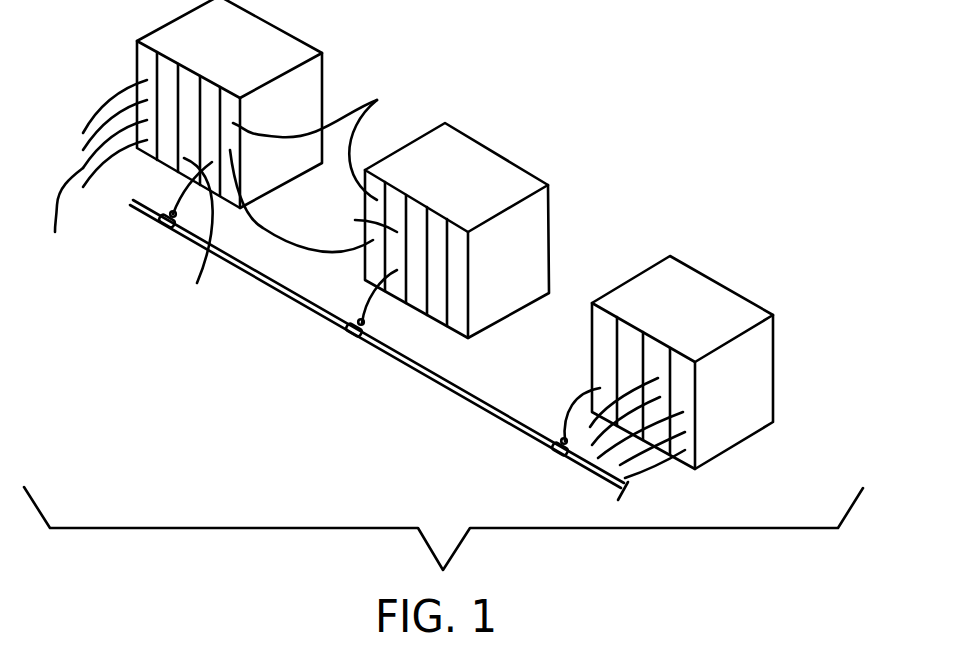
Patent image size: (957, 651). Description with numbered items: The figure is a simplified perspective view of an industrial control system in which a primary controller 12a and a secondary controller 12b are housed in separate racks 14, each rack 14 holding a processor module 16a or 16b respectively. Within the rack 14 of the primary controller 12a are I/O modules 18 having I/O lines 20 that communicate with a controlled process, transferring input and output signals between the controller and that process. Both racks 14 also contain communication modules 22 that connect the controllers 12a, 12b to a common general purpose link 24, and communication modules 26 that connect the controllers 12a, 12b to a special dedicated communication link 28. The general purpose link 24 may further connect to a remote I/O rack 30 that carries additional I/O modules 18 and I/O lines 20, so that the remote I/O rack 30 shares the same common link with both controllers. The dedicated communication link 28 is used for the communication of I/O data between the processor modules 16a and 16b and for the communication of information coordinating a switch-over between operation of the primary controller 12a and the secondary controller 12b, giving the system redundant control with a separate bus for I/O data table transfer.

The primary controller 12a is at (242, 48).
The secondary controller 12b is at (443, 153).
The rack 14 is at (180, 17).
The processor module 16a is at (187, 153).
The processor module 16b is at (415, 293).
The I/O module 18 is at (137, 67).
The I/O line 20 is at (730, 485).
The communication module 22 is at (290, 237).
The general purpose link 24 is at (492, 417).
The communication module 26 is at (315, 134).
The dedicated communication link 28 is at (280, 243).
The I/O rack 30 is at (683, 290).